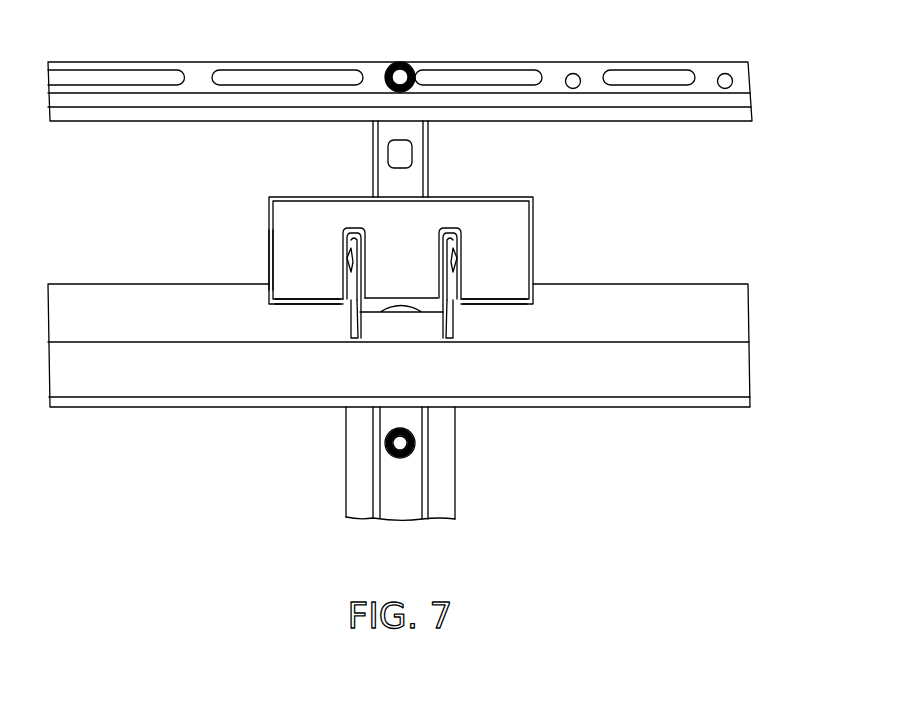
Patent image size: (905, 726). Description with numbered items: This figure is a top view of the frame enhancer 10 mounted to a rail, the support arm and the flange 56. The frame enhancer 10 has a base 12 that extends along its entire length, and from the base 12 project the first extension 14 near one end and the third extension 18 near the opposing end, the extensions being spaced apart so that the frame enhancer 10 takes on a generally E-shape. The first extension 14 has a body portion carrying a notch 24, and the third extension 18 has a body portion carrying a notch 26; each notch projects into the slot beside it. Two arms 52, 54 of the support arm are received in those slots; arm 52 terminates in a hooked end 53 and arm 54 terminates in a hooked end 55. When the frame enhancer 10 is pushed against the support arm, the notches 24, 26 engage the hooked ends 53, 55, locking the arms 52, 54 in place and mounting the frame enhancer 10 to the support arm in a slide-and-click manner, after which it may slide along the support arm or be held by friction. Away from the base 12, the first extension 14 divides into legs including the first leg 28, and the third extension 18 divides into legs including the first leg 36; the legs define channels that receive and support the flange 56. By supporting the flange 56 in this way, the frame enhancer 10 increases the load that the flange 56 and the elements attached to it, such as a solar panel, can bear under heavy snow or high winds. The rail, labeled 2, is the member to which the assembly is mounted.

The top rail 2 is at (556, 70).
The frame enhancer 10 is at (349, 218).
The base 12 is at (462, 218).
The first extension 14 is at (290, 262).
The third extension 18 is at (522, 230).
The notch 24 is at (340, 260).
The notch 26 is at (460, 258).
The first leg 28 is at (290, 287).
The first leg 36 is at (522, 280).
The arm 52 is at (350, 312).
The hooked end 53 is at (340, 240).
The arm 54 is at (452, 312).
The hooked end 55 is at (463, 245).
The flange 56 is at (735, 320).